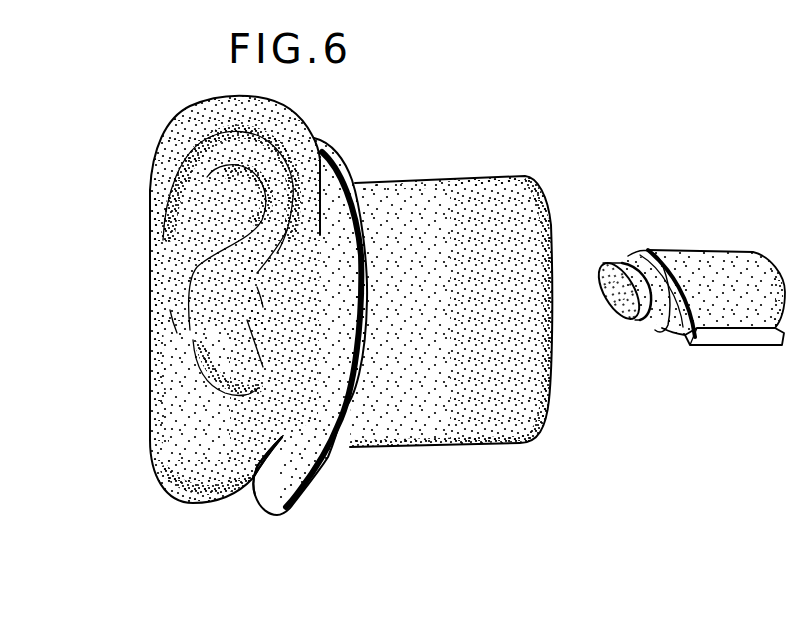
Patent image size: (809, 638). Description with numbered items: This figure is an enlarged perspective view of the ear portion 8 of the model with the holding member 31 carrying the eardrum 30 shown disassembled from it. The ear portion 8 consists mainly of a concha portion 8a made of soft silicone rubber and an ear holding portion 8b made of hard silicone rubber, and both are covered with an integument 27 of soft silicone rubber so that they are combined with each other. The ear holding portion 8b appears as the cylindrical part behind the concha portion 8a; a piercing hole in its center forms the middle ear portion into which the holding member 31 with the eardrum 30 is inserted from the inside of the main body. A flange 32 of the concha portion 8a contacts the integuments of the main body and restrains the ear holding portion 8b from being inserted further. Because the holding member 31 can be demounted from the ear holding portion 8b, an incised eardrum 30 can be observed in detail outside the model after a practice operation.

The ear portion 8 is at (140, 445).
The concha portion 8a is at (172, 365).
The ear holding portion 8b is at (461, 418).
The integument 27 is at (421, 205).
The eardrum 30 is at (605, 291).
The holding member 31 is at (697, 270).
The flange 32 is at (285, 458).